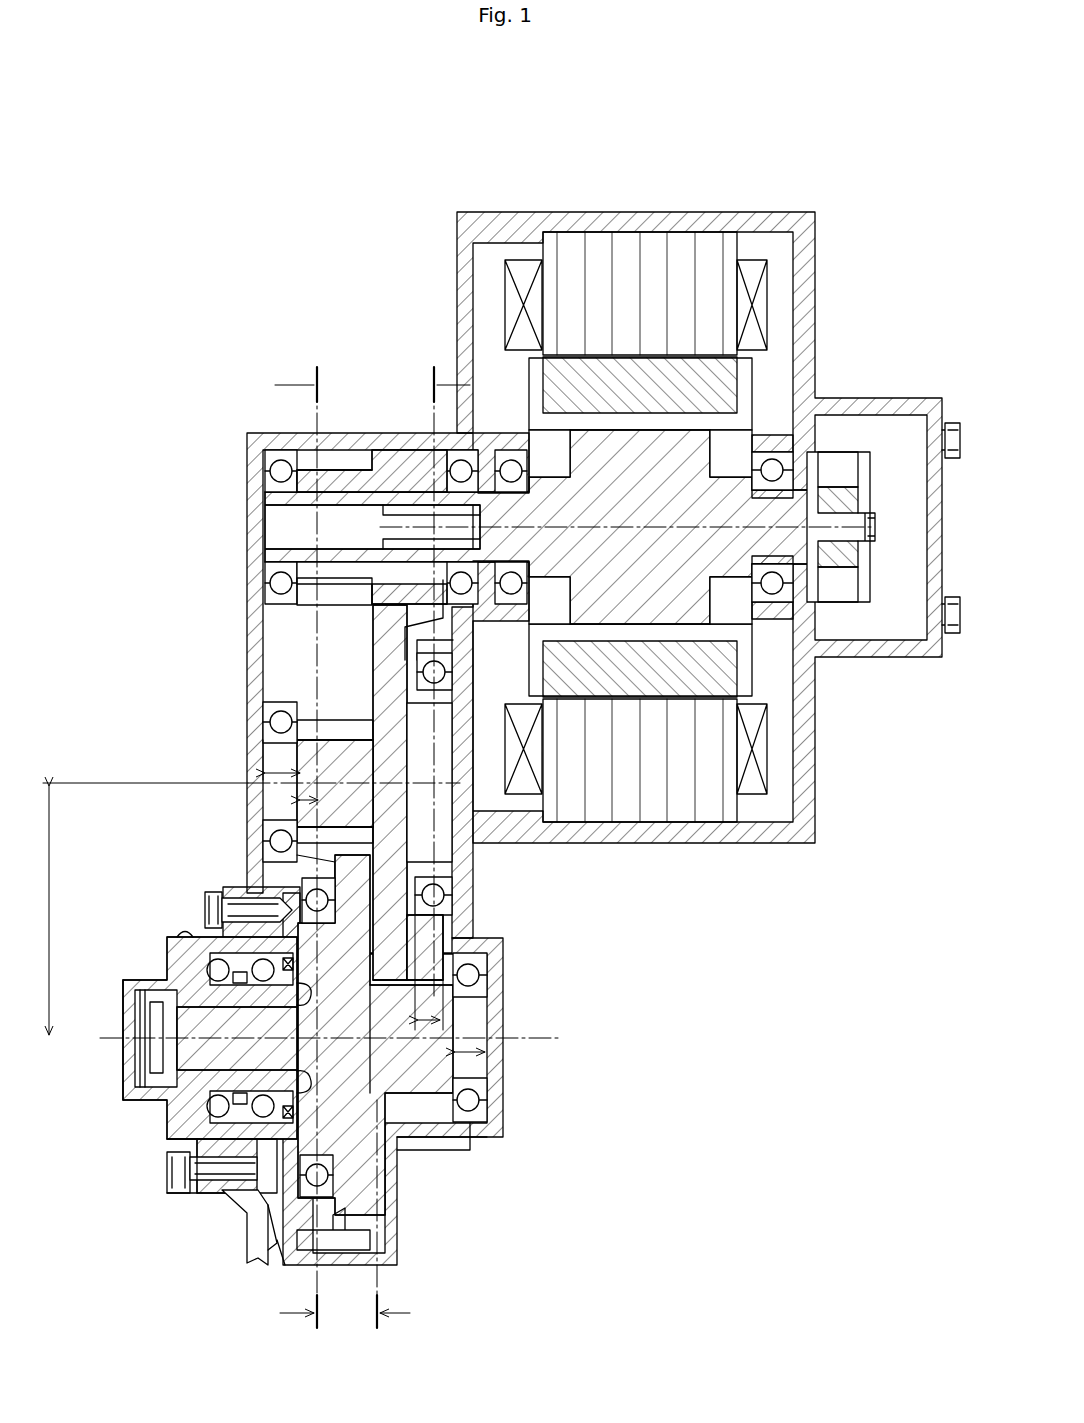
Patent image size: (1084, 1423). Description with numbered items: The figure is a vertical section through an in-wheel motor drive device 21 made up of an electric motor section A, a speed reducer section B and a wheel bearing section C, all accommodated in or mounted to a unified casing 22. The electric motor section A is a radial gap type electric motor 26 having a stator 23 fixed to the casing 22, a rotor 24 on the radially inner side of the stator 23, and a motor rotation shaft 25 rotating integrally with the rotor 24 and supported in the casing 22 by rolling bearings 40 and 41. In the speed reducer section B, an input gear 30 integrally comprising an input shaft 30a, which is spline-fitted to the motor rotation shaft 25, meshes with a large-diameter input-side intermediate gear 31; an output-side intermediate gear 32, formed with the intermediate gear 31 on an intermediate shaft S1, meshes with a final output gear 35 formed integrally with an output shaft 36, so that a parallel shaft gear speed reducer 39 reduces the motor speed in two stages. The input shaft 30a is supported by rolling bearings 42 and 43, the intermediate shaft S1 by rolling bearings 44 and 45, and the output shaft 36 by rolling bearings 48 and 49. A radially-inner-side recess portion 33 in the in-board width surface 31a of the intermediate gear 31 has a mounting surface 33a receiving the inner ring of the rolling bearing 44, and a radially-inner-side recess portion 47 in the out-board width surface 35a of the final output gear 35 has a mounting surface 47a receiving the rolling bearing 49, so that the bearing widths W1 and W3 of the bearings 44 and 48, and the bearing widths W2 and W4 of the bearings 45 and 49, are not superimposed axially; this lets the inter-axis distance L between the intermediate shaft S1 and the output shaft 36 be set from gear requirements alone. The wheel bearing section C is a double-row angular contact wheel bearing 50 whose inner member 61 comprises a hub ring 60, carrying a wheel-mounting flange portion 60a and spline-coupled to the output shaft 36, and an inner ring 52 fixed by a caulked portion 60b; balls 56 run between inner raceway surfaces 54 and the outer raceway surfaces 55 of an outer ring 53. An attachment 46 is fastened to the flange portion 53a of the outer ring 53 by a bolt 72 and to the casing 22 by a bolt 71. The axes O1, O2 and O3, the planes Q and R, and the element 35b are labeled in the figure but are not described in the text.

The electric motor section A is at (575, 468).
The speed reducer section B is at (312, 849).
The wheel bearing section C is at (304, 1053).
The in-wheel motor drive device 21 is at (627, 172).
The casing 22 is at (478, 870).
The stator 23 is at (675, 250).
The rotor 24 is at (708, 390).
The motor rotation shaft 25 is at (740, 553).
The electric motor 26 is at (768, 357).
The input gear 30 is at (412, 470).
The input shaft 30a is at (330, 470).
The input-side intermediate gear 31 is at (400, 607).
The width surface 31a is at (445, 935).
The output-side intermediate gear 32 is at (353, 735).
The radially-inner-side recess portion 33 is at (450, 900).
The mounting surface 33a is at (447, 685).
The final output gear 35 is at (372, 1200).
The width surface 35a is at (290, 1250).
The bearing 35b is at (487, 1105).
The output shaft 36 is at (485, 1060).
The parallel shaft gear speed reducer 39 is at (335, 640).
The rolling bearing 40 is at (511, 466).
The rolling bearing 41 is at (785, 455).
The rolling bearing 42 is at (462, 466).
The rolling bearing 43 is at (278, 466).
The rolling bearing 44 is at (452, 672).
The rolling bearing 45 is at (281, 718).
The attachment 46 is at (266, 1245).
The radially-inner-side recess portion 47 is at (322, 1215).
The mounting surface 47a is at (270, 920).
The rolling bearing 48 is at (472, 975).
The rolling bearing 49 is at (318, 895).
The wheel bearing 50 is at (167, 1170).
The inner ring 52 is at (295, 1080).
The outer ring 53 is at (262, 1185).
The flange portion 53a is at (205, 1200).
The inner raceway surface 54 is at (225, 1133).
The outer raceway surfaces 55 is at (210, 970).
The balls 56 is at (250, 1080).
The hub ring 60 is at (250, 990).
The flange portion 60a is at (195, 1190).
The caulked portion 60b is at (398, 1150).
The inner member 61 is at (130, 1005).
The bolt 71 is at (210, 903).
The bolt 72 is at (258, 1240).
The motor axis O1 is at (870, 527).
The intermediate axis O2 is at (232, 785).
The output axis O3 is at (110, 1038).
The reference plane Q is at (296, 842).
The reference plane R is at (423, 841).
The inter-axis distance L is at (52, 890).
The intermediate shaft S1 is at (270, 763).
The bearing width W1 is at (430, 1020).
The bearing width W2 is at (288, 778).
The bearing width W3 is at (475, 1052).
The bearing width W4 is at (315, 800).